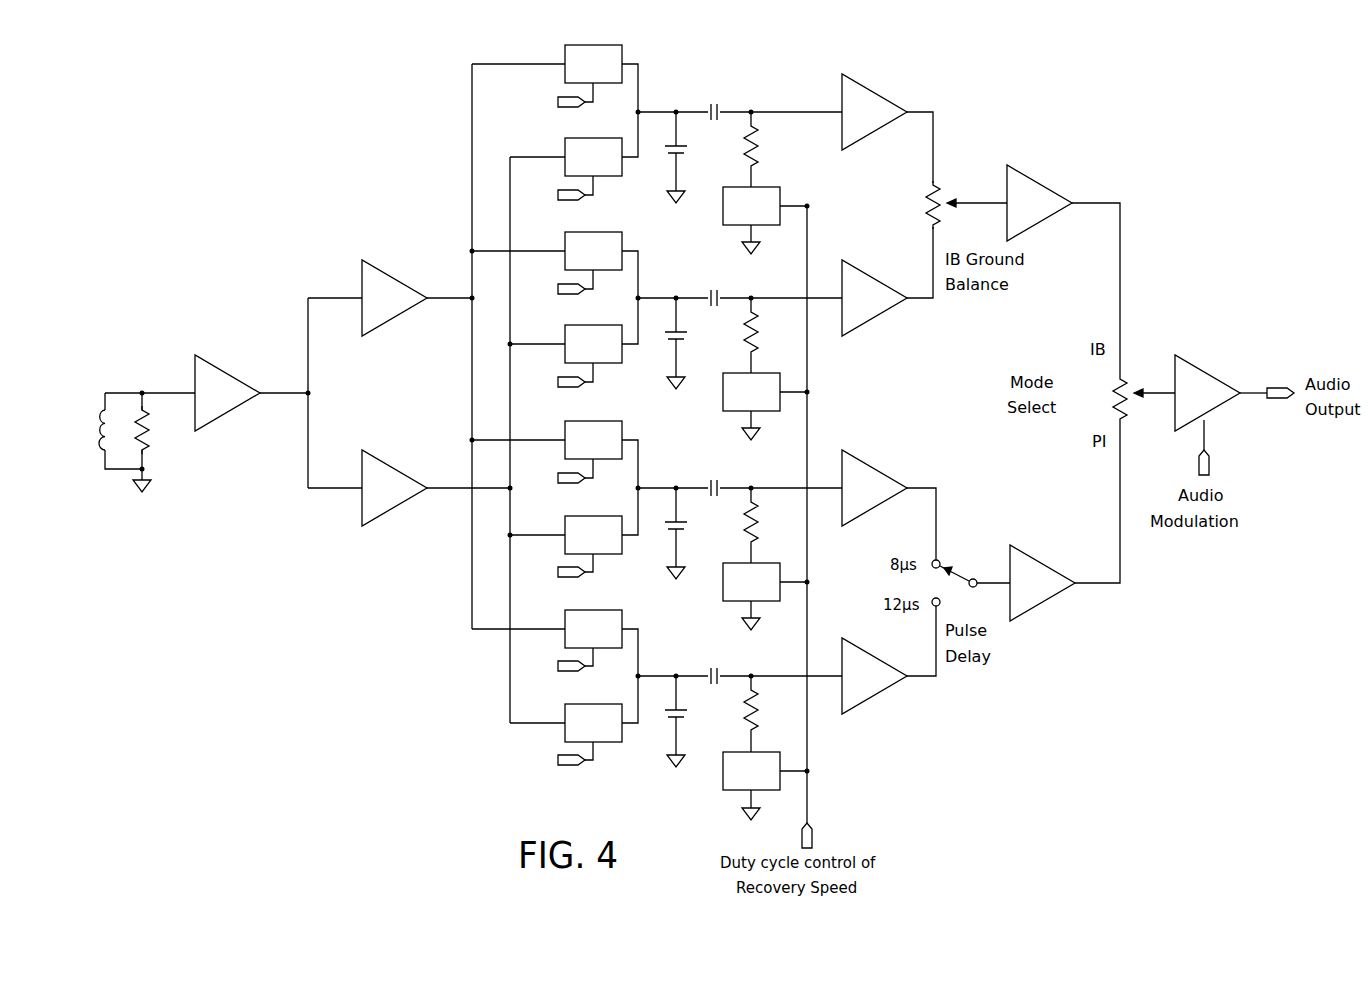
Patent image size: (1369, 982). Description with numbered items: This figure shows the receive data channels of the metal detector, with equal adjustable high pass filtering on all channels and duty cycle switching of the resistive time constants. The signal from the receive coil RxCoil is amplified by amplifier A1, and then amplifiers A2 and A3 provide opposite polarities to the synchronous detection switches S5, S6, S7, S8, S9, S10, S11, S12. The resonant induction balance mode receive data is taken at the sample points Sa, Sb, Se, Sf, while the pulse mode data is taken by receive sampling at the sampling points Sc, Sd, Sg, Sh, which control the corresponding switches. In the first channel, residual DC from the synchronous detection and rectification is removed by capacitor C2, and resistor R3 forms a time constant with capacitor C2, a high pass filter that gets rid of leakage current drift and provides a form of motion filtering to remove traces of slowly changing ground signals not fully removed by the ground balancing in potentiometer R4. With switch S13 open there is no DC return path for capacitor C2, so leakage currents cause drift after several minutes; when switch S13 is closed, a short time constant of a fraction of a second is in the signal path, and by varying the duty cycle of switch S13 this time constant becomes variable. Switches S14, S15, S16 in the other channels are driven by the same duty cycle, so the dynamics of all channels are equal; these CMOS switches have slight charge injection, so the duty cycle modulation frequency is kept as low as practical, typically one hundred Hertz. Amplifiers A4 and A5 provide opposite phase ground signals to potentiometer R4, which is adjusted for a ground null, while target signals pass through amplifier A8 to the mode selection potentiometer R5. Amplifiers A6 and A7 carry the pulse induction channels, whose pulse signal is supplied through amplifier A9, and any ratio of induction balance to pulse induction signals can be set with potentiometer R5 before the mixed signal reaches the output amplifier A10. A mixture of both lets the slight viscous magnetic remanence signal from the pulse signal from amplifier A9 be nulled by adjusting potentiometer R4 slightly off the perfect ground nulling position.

The receive coil RxCoil is at (125, 442).
The amplifier A1 is at (227, 393).
The amplifier A2 is at (394, 298).
The amplifier A3 is at (394, 488).
The amplifier A4 is at (874, 112).
The amplifier A5 is at (874, 298).
The amplifier A6 is at (874, 488).
The amplifier A7 is at (874, 676).
The amplifier A8 is at (1039, 203).
The amplifier A9 is at (1042, 583).
The amplifier A10 is at (1207, 393).
The synchronous detection switch S5 is at (593, 64).
The synchronous detection switch S6 is at (593, 157).
The synchronous detection switch S7 is at (593, 251).
The synchronous detection switch S8 is at (593, 344).
The synchronous detection switch S9 is at (593, 440).
The synchronous detection switch S10 is at (593, 535).
The synchronous detection switch S11 is at (593, 629).
The synchronous detection switch S12 is at (593, 723).
The switch S13 is at (751, 206).
The switch S14 is at (751, 392).
The switch S15 is at (751, 582).
The switch S16 is at (751, 771).
The sample point Sa is at (560, 97).
The sample point Sb is at (560, 284).
The sampling point Sc is at (560, 473).
The sampling point Sd is at (560, 662).
The sample point Se is at (560, 190).
The sample point Sf is at (561, 377).
The sampling point Sg is at (560, 568).
The sampling point Sh is at (560, 756).
The capacitor C2 is at (710, 96).
The resistor R3 is at (764, 149).
The potentiometer R4 is at (951, 205).
The potentiometer R5 is at (1126, 399).